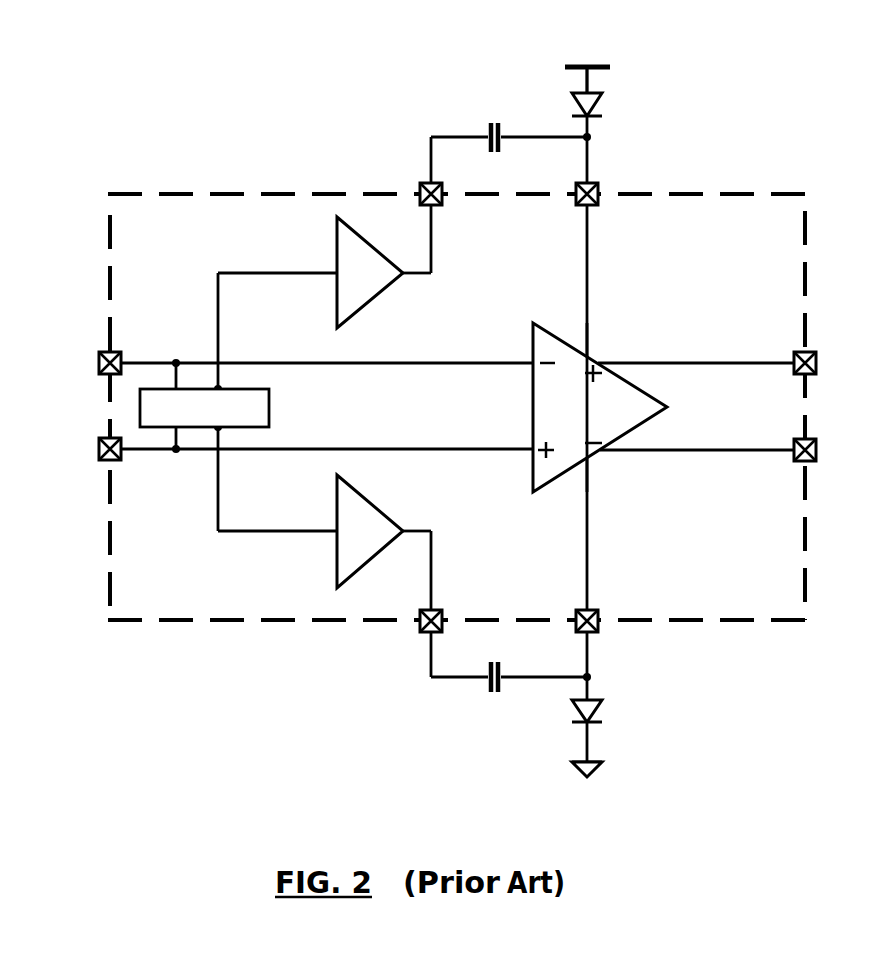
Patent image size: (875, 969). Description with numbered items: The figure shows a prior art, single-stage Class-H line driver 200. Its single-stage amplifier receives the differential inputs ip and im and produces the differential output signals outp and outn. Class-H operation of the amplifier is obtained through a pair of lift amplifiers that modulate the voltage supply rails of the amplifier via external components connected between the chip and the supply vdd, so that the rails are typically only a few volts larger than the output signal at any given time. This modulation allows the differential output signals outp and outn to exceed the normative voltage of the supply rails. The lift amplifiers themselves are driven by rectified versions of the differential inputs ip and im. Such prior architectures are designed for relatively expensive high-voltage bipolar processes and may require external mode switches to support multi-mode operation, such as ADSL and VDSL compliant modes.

The single-stage Class-H line driver 200 is at (862, 46).
The supply voltage terminal vdd is at (587, 65).
The differential input im is at (85, 365).
The differential input ip is at (88, 450).
The differential output signal outp is at (774, 350).
The differential output signal outn is at (774, 463).